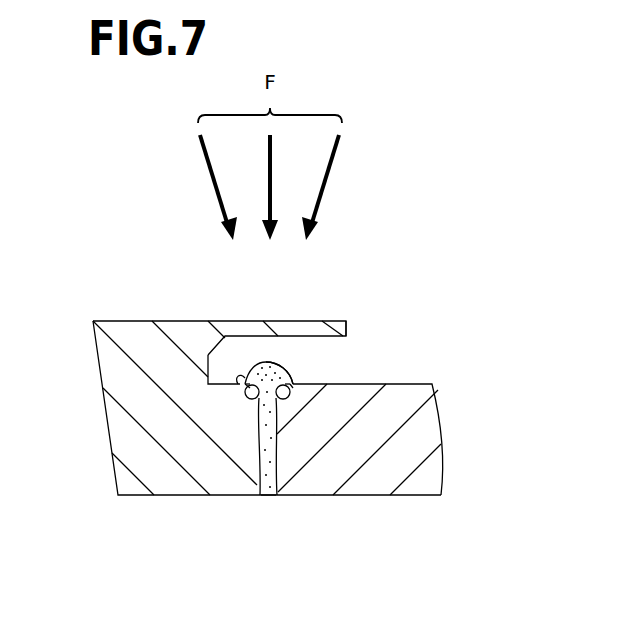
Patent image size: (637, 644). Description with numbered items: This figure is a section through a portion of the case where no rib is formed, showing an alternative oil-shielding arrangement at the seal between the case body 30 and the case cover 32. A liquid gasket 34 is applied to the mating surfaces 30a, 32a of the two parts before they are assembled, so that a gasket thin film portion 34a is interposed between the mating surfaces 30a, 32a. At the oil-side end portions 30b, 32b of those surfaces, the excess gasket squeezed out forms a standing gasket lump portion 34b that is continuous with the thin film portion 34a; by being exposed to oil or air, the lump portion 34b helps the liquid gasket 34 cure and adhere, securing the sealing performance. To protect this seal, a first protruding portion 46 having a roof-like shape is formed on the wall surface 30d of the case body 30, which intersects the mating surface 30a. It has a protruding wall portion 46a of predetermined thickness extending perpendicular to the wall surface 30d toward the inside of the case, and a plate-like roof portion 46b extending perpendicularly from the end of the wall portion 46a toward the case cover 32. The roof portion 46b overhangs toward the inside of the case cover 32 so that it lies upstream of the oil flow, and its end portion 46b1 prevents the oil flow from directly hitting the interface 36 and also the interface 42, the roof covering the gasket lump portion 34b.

The case body 30 is at (144, 514).
The mating surface of the case body 30a is at (259, 472).
The oil-side end portion of the mating surface of the case body 30b is at (255, 399).
The wall surface of the case body 30d is at (205, 373).
The case cover 32 is at (432, 520).
The mating surface of the case cover 32a is at (278, 470).
The oil-side end portion of the mating surface of the case cover 32b is at (280, 399).
The liquid gasket 34 is at (313, 377).
The gasket thin film portion 34a is at (263, 486).
The gasket lump portion 34b is at (292, 363).
The interface 36 is at (242, 406).
The interface 42 is at (298, 406).
The first protruding portion 46 is at (173, 306).
The protruding wall portion 46a is at (141, 330).
The roof portion 46b is at (322, 322).
The end portion of the roof portion 46b1 is at (349, 327).